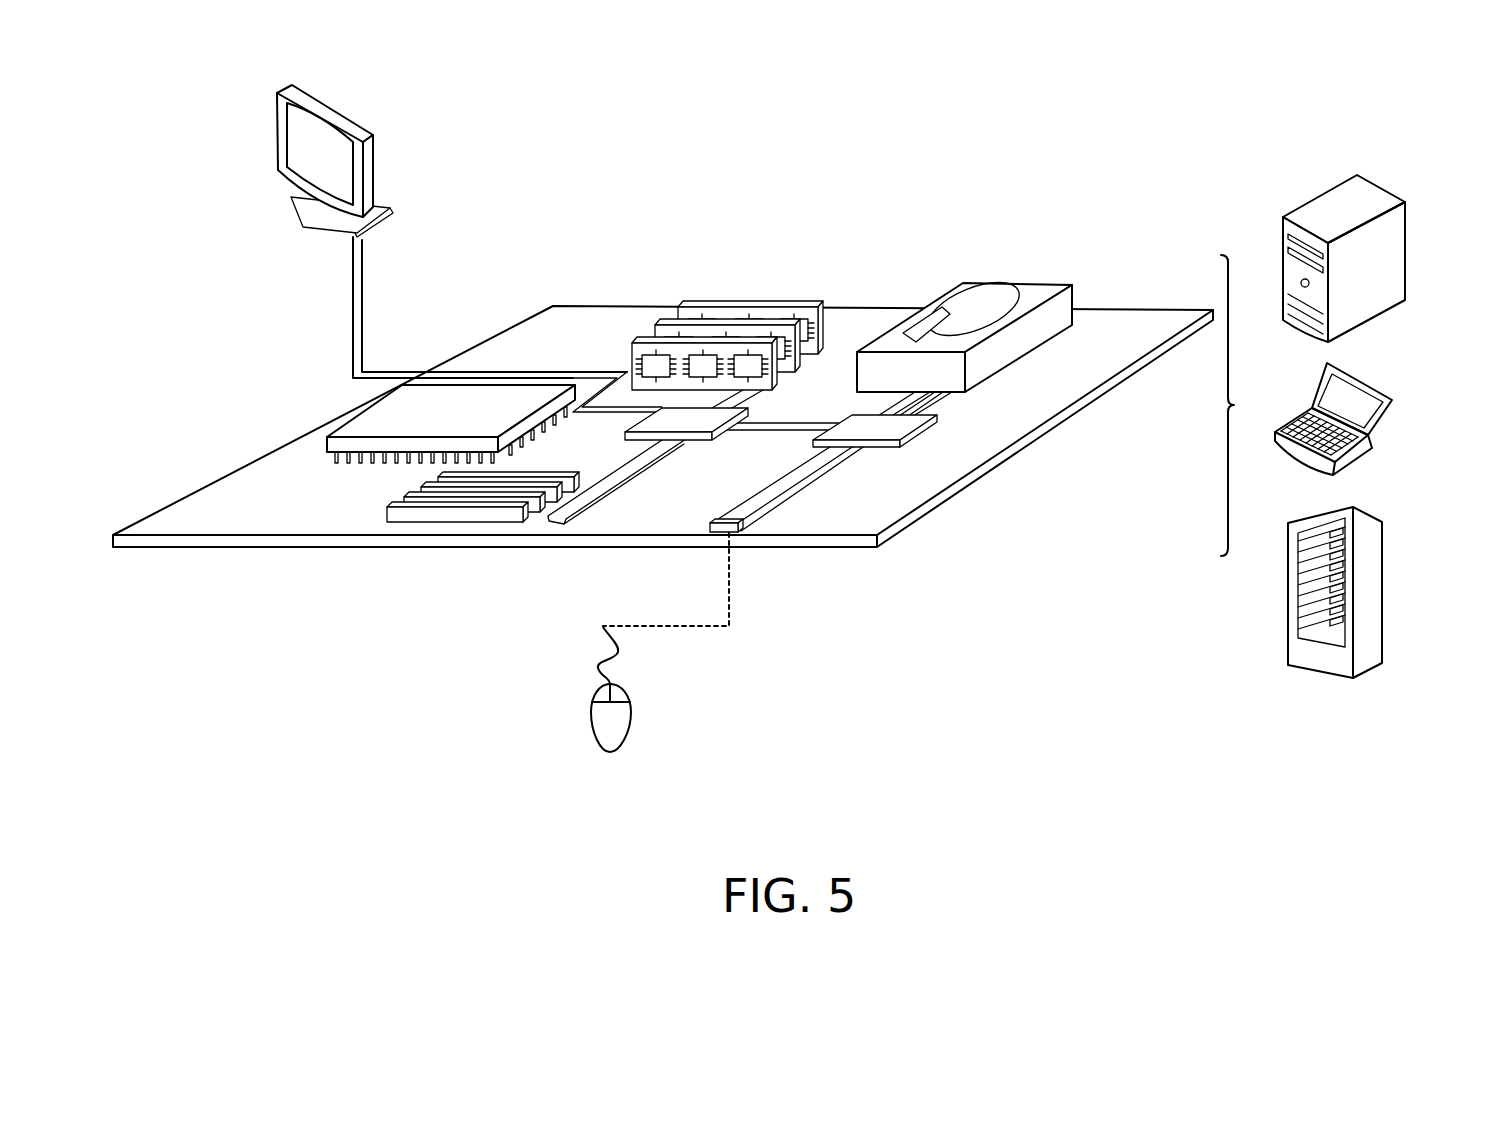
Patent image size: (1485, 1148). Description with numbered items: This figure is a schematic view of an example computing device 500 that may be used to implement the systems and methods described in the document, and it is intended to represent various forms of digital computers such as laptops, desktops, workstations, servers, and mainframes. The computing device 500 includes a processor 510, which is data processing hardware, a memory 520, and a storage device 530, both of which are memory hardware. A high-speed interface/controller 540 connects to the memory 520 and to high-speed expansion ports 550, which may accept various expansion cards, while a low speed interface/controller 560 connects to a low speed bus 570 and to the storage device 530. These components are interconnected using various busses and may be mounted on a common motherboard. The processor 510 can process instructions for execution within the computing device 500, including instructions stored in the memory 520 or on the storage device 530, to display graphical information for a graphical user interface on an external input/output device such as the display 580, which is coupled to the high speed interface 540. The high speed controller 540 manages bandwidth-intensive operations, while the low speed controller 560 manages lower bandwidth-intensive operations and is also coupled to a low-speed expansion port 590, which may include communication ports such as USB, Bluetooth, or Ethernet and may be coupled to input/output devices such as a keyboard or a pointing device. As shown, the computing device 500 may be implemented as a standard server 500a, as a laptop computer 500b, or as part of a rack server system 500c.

The computing device 500 is at (831, 152).
The standard server 500a is at (1313, 197).
The laptop computer 500b is at (1370, 379).
The rack server system 500c is at (1378, 573).
The processor 510 is at (327, 436).
The memory 520 is at (747, 302).
The storage device 530 is at (1012, 283).
The high-speed interface/controller 540 is at (694, 444).
The high-speed expansion ports 550 is at (387, 510).
The low speed interface/controller 560 is at (865, 422).
The low speed bus 570 is at (815, 488).
The display 580 is at (277, 140).
The low-speed expansion port 590 is at (740, 533).